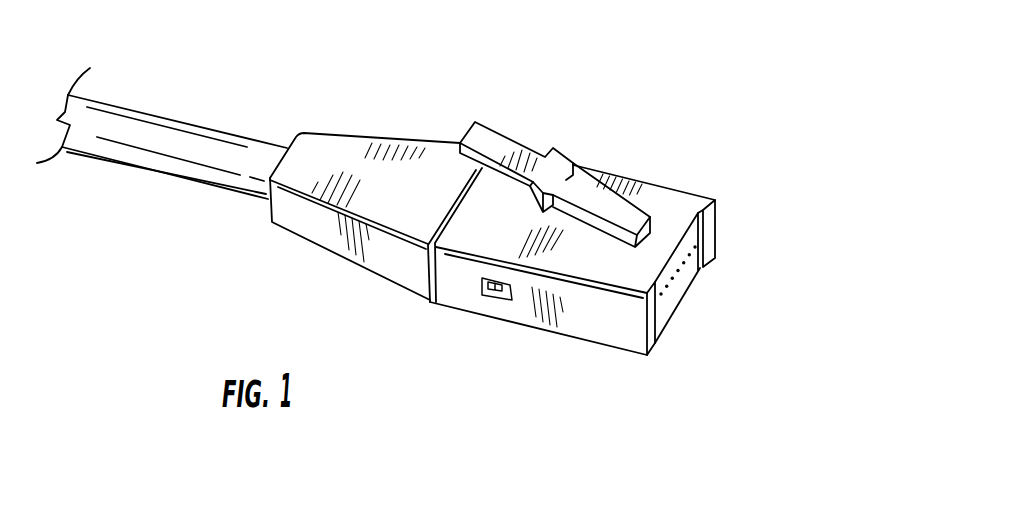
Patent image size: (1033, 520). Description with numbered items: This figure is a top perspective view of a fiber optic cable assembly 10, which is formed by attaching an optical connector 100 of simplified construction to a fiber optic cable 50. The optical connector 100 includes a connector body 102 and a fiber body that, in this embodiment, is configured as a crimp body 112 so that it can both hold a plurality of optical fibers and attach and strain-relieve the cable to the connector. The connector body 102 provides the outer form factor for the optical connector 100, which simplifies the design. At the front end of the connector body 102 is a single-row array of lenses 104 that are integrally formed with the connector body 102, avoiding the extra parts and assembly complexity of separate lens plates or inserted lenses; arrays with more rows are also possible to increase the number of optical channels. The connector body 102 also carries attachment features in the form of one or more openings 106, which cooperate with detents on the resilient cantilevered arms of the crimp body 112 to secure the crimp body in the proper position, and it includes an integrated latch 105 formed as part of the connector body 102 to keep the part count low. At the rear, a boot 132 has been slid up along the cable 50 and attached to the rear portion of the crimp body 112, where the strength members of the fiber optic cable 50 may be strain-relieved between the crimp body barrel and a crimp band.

The fiber optic cable assembly 10 is at (602, 60).
The fiber optic cable 50 is at (148, 162).
The optical connector 100 is at (578, 325).
The connector body 102 is at (682, 188).
The lenses 104 is at (685, 263).
The integrated latch 105 is at (490, 138).
The openings 106 is at (500, 300).
The crimp body 112 is at (430, 302).
The boot 132 is at (300, 230).